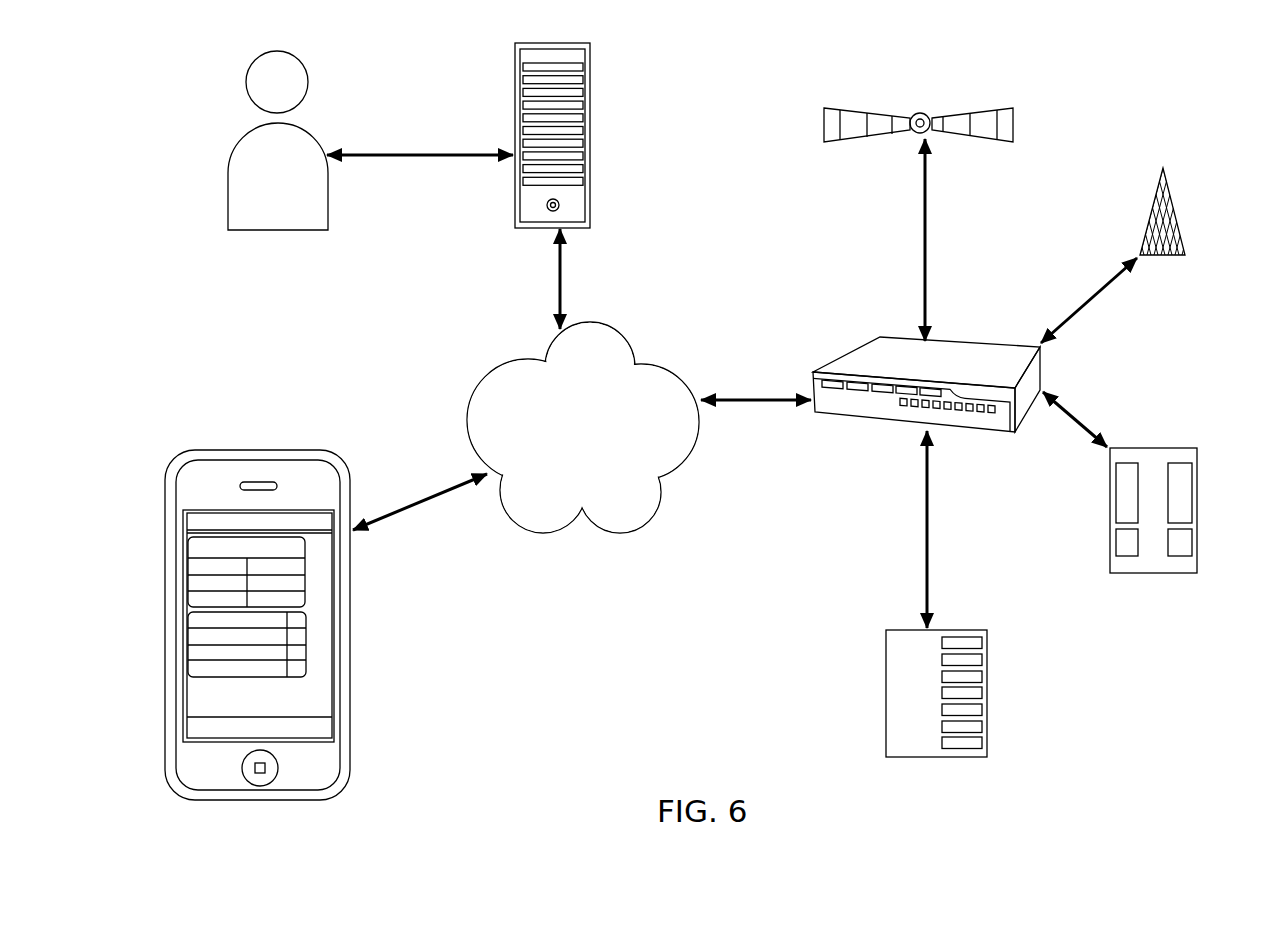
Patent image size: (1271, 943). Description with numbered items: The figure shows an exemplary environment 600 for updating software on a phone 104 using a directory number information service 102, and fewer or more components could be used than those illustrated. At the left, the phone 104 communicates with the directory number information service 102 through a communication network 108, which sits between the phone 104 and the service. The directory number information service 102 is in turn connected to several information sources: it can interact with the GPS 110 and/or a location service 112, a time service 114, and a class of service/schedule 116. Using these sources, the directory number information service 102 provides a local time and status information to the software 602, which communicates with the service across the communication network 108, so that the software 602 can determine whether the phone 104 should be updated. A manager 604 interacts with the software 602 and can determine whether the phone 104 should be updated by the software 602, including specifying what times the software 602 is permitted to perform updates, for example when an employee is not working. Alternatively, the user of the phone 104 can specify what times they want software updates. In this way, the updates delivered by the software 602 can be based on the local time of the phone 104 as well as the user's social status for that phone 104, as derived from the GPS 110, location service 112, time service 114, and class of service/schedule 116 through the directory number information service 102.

The environment 600 is at (690, 158).
The software 602 is at (553, 58).
The manager 604 is at (301, 63).
The communication network 108 is at (617, 330).
The phone 104 is at (183, 457).
The directory number information service 102 is at (992, 343).
The GPS 110 is at (1015, 117).
The location service 112 is at (1171, 194).
The time service 114 is at (1197, 461).
The class of service/schedule 116 is at (987, 645).